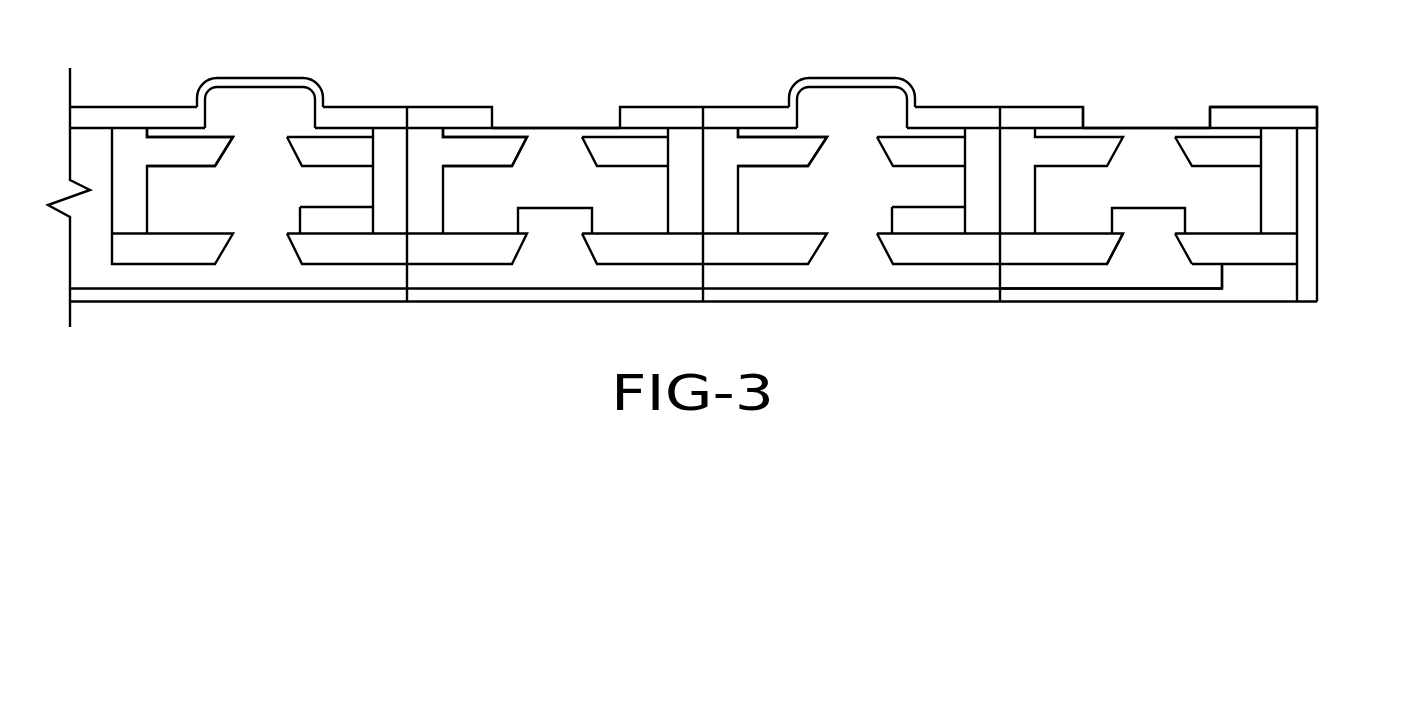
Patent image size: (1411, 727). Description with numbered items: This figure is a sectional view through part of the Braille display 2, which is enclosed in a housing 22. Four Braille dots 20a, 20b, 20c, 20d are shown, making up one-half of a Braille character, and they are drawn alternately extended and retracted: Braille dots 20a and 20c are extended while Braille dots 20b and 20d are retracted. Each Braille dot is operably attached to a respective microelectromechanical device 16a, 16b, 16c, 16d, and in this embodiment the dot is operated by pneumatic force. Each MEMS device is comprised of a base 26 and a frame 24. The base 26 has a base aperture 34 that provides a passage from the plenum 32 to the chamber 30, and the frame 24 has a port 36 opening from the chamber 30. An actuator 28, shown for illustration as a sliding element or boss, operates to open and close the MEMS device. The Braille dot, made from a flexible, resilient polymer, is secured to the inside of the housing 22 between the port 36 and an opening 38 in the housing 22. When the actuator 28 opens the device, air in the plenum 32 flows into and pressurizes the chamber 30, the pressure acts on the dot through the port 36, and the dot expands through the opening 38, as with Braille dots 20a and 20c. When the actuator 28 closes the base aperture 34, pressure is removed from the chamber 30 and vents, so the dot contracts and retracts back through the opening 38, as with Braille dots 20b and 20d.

The Braille display 2 is at (1258, 107).
The microelectromechanical (MEMS) device 16a is at (162, 130).
The microelectromechanical (MEMS) device 16b is at (457, 128).
The microelectromechanical (MEMS) device 16c is at (753, 128).
The microelectromechanical (MEMS) device 16d is at (1048, 128).
The Braille dot 20a is at (260, 78).
The Braille dot 20b is at (554, 128).
The Braille dot 20c is at (853, 78).
The Braille dot 20d is at (1116, 128).
The housing 22 is at (1317, 281).
The frame 24 is at (1297, 233).
The base 26 is at (1258, 264).
The actuator 28 is at (1186, 218).
The chamber 30 is at (1262, 192).
The plenum 32 is at (1064, 293).
The base aperture 34 is at (1126, 260).
The port 36 is at (1182, 142).
The opening 38 is at (1155, 115).